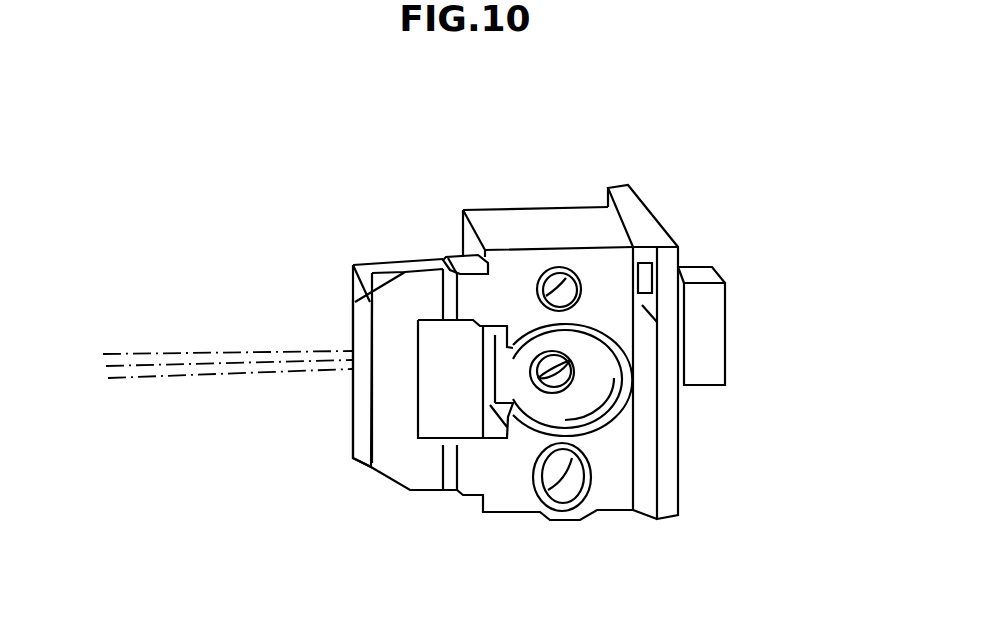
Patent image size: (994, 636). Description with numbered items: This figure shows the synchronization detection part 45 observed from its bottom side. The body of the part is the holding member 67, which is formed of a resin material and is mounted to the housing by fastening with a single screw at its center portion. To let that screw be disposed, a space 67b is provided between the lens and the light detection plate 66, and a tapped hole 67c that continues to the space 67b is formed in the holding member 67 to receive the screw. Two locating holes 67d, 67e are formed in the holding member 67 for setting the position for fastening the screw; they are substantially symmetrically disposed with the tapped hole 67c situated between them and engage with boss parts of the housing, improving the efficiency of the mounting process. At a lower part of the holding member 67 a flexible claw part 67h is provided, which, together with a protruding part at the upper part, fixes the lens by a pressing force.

The synchronization detection part 45 is at (661, 172).
The light detection plate 66 is at (670, 360).
The holding member 67 is at (460, 238).
The space 67b is at (560, 362).
The tapped hole 67c is at (572, 368).
The locating hole 67d is at (560, 287).
The locating hole 67e is at (553, 477).
The claw part 67h is at (380, 417).